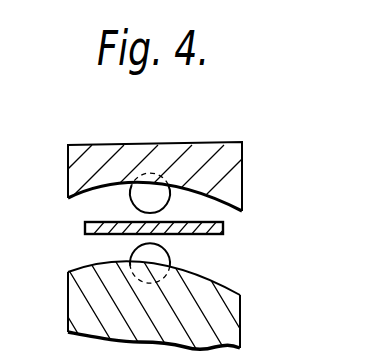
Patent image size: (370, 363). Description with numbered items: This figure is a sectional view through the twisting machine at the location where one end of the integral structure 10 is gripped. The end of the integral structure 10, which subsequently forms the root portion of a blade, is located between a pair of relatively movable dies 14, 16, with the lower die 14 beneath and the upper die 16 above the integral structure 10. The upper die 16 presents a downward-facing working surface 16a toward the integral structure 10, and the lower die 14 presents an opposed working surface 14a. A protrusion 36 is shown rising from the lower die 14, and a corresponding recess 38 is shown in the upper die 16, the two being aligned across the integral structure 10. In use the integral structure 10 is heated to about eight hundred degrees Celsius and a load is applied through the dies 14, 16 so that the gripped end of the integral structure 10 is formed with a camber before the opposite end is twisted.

The die 16 is at (93, 155).
The working surface of upper die member 16a is at (204, 197).
The recess in upper die member 38 is at (142, 200).
The integral structure 10 is at (85, 229).
The protrusion on lower die member 36 is at (140, 253).
The die 14 is at (87, 302).
The working surface of lower die member 14a is at (210, 283).